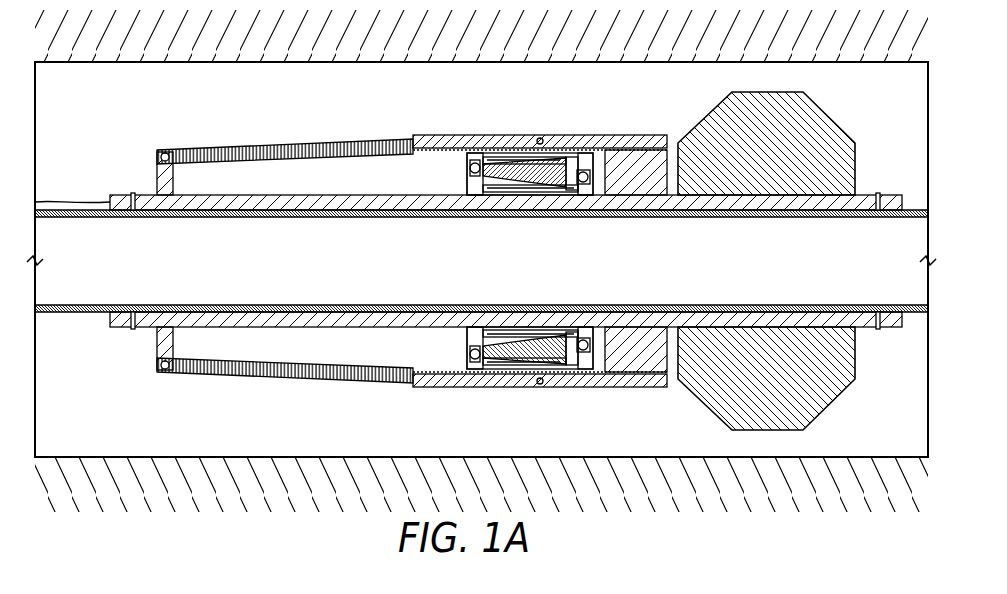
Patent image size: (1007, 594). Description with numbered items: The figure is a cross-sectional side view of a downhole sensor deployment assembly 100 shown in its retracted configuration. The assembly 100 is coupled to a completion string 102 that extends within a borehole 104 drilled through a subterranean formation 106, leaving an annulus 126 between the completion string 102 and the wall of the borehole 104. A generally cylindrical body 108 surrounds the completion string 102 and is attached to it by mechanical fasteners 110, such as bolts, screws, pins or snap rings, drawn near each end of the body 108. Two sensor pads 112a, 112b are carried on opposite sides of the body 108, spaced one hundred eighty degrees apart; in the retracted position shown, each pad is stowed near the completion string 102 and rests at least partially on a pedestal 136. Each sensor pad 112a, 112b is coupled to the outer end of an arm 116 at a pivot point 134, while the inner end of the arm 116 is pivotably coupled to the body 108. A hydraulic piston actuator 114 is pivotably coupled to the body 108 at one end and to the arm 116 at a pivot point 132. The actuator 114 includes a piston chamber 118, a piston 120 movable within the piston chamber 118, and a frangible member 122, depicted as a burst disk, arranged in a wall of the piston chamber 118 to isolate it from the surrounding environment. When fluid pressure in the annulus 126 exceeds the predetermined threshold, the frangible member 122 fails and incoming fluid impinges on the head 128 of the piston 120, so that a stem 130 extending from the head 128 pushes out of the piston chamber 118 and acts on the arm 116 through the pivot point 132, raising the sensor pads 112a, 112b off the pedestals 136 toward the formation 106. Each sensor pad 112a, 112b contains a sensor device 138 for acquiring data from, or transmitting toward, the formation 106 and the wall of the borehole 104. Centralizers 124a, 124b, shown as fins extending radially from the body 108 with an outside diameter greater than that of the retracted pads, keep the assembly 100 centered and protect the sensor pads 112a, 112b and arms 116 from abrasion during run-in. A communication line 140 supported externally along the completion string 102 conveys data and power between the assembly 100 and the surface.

The downhole sensor deployment assembly 100 is at (108, 134).
The completion string 102 is at (103, 218).
The borehole 104 is at (134, 60).
The subterranean formation 106 is at (466, 46).
The body 108 is at (226, 212).
The mechanical fastener 110 is at (133, 192).
The sensor pad 112a is at (435, 133).
The sensor pad 112b is at (435, 389).
The actuator 114 is at (460, 168).
The arm 116 is at (262, 145).
The piston chamber 118 is at (522, 331).
The piston 120 is at (514, 164).
The frangible member 122 is at (590, 160).
The centralizer 124a is at (838, 122).
The centralizer 124b is at (840, 397).
The annulus 126 is at (173, 108).
The head 128 is at (576, 331).
The stem 130 is at (550, 160).
The pivot point 132 is at (467, 345).
The pivot point 134 is at (540, 138).
The pedestal 136 is at (667, 151).
The sensor device 138 is at (451, 136).
The communication line 140 is at (71, 203).